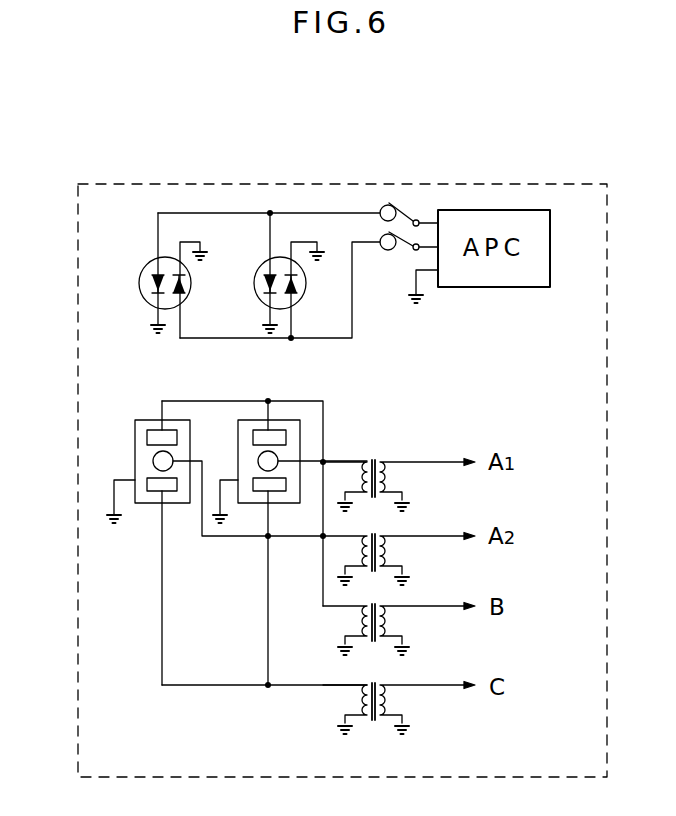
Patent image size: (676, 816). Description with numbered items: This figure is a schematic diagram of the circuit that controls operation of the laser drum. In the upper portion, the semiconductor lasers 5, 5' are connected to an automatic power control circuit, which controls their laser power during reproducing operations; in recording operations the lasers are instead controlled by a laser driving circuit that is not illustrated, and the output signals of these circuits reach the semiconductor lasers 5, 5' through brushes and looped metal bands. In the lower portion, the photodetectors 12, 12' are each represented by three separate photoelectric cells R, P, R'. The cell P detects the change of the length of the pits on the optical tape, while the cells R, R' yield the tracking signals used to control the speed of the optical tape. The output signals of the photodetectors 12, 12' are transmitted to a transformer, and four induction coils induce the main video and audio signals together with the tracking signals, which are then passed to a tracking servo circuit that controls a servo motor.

The semiconductor laser 5 is at (289, 237).
The semiconductor laser 5' is at (146, 234).
The photodetector 12 is at (311, 532).
The photodetector 12' is at (108, 536).
The photoelectric cell R is at (106, 448).
The photoelectric cell P is at (153, 461).
The photoelectric cell R' is at (106, 536).